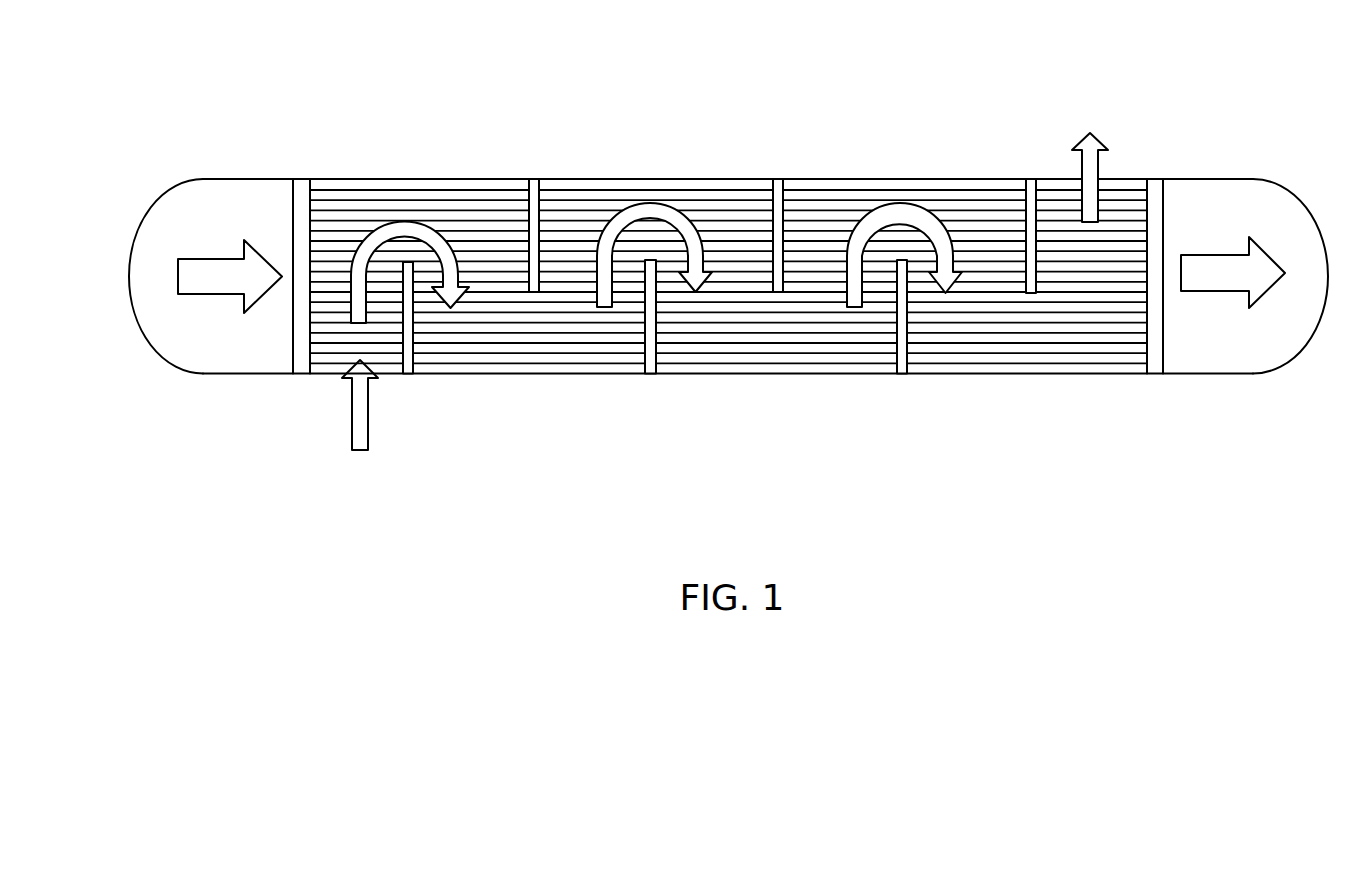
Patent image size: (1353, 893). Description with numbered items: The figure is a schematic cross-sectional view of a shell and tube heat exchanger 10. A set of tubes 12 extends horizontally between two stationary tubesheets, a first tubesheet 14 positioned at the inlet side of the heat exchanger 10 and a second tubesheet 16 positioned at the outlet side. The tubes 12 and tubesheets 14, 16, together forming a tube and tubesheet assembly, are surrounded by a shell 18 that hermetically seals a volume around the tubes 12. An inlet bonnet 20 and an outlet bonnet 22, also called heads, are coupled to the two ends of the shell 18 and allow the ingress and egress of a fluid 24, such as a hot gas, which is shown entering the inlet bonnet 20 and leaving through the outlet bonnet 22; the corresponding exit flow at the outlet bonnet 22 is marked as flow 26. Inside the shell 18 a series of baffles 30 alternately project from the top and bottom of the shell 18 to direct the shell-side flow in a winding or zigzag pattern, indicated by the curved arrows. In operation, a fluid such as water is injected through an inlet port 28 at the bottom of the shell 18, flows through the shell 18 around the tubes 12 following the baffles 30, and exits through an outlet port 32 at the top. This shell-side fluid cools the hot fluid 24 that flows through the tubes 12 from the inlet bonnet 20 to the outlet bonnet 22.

The shell and tube heat exchanger 10 is at (701, 278).
The tubes 12 is at (506, 353).
The first tubesheet 14 is at (303, 375).
The second tubesheet 16 is at (1155, 377).
The shell 18 is at (452, 180).
The inlet bonnet 20 is at (212, 222).
The outlet bonnet 22 is at (1203, 210).
The fluid 24 is at (213, 281).
The tube-side fluid outlet flow 26 is at (1217, 280).
The inlet port 28 is at (350, 423).
The baffles 30 is at (653, 362).
The outlet port 32 is at (1081, 162).